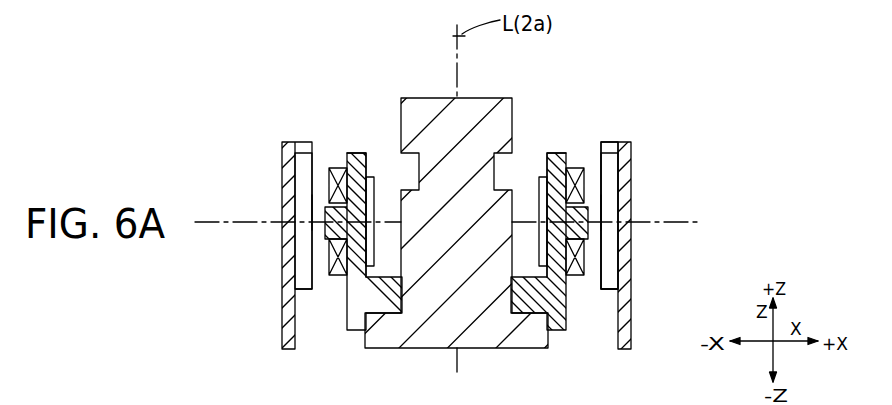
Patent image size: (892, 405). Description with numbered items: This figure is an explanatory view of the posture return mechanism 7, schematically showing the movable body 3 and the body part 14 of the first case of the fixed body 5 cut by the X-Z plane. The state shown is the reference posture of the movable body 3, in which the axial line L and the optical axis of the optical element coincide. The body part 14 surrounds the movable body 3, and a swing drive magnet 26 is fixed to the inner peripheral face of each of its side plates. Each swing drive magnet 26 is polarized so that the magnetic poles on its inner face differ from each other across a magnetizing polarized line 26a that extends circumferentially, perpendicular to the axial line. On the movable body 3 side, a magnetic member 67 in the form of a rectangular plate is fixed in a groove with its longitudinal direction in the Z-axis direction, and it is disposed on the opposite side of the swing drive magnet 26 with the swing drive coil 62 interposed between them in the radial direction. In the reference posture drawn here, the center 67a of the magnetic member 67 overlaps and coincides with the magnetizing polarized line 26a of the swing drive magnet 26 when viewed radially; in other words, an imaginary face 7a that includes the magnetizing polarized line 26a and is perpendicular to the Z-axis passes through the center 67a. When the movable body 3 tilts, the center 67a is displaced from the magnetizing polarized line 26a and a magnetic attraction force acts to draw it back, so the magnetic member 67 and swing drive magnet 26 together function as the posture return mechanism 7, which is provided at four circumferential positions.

The movable body 3 is at (479, 95).
The fixed body 5 is at (636, 139).
The posture return mechanism 7 is at (336, 292).
The imaginary face 7a is at (257, 223).
The body part 14 is at (282, 165).
The swing drive magnet 26 is at (304, 163).
The magnetizing polarized line 26a is at (298, 222).
The swing drive coil 62 is at (343, 174).
The magnetic member 67 is at (372, 176).
The center of the magnetic member 67a is at (371, 220).